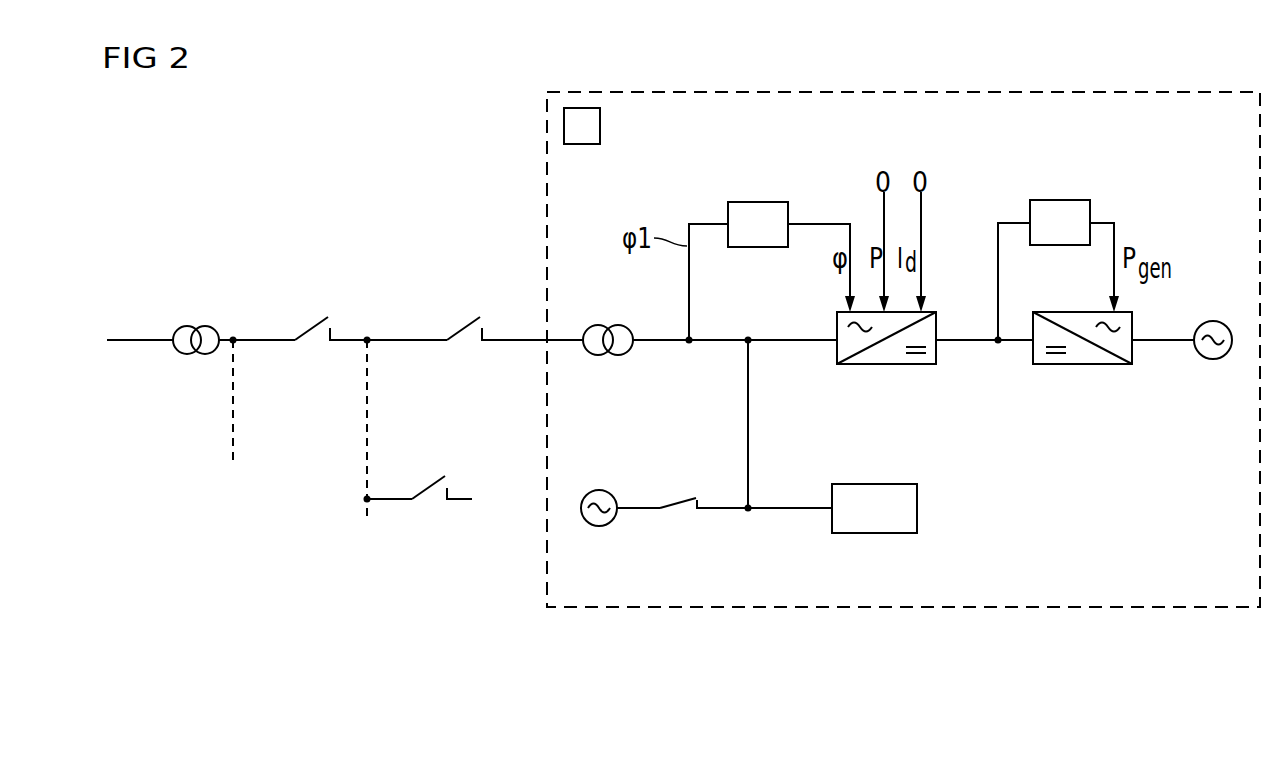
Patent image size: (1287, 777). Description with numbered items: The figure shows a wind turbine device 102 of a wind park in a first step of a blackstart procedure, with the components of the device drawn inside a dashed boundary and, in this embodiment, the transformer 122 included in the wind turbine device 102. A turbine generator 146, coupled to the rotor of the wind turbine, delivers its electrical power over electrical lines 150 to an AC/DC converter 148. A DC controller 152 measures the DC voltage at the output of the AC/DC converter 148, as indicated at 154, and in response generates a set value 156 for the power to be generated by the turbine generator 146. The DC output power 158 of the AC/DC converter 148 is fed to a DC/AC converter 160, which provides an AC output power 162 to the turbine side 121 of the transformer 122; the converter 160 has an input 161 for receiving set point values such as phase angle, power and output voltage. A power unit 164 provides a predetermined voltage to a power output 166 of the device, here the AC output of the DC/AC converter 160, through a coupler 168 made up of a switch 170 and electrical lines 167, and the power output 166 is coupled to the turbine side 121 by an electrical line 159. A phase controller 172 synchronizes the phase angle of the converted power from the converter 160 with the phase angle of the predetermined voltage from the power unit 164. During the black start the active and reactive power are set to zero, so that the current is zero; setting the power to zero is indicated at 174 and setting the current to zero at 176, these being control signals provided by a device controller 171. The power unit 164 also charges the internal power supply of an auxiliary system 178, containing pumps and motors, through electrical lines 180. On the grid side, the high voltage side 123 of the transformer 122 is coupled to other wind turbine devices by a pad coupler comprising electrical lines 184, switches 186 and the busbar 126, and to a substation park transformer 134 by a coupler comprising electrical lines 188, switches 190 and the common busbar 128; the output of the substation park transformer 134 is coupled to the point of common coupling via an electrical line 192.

The wind turbine device 102 is at (900, 91).
The turbine side of the transformer 121 is at (611, 267).
The transformer 122 is at (609, 298).
The high voltage side of the transformer 123 is at (592, 326).
The busbar 126 is at (365, 442).
The common busbar 128 is at (236, 372).
The substation park transformer 134 is at (199, 326).
The turbine generator 146 is at (1212, 320).
The AC/DC converter 148 is at (1083, 366).
The electrical lines 150 is at (1162, 342).
The DC controller 152 is at (1059, 199).
The DC voltage measurement 154 is at (1000, 286).
The set value 156 is at (1116, 236).
The DC output power 158 is at (965, 342).
The electrical line 159 is at (788, 342).
The DC/AC converter 160 is at (888, 366).
The input of the converter 161 is at (932, 310).
The AC output power 162 is at (727, 339).
The power unit 164 is at (599, 527).
The power output 166 is at (834, 332).
The electrical lines 167 is at (746, 412).
The coupler 168 is at (726, 510).
The switch 170 is at (682, 500).
The device controller 171 is at (601, 126).
The phase controller 172 is at (752, 201).
The control signal setting power to zero 174 is at (882, 210).
The control signal setting current to zero 176 is at (923, 210).
The auxiliary system 178 is at (918, 508).
The electrical lines 180 is at (792, 510).
The electrical lines of the pad coupler 184 is at (408, 339).
The switches of the pad coupler 186 is at (462, 322).
The electrical lines of the coupler 188 is at (263, 339).
The switches of the coupler 190 is at (312, 322).
The electrical line 192 is at (133, 339).